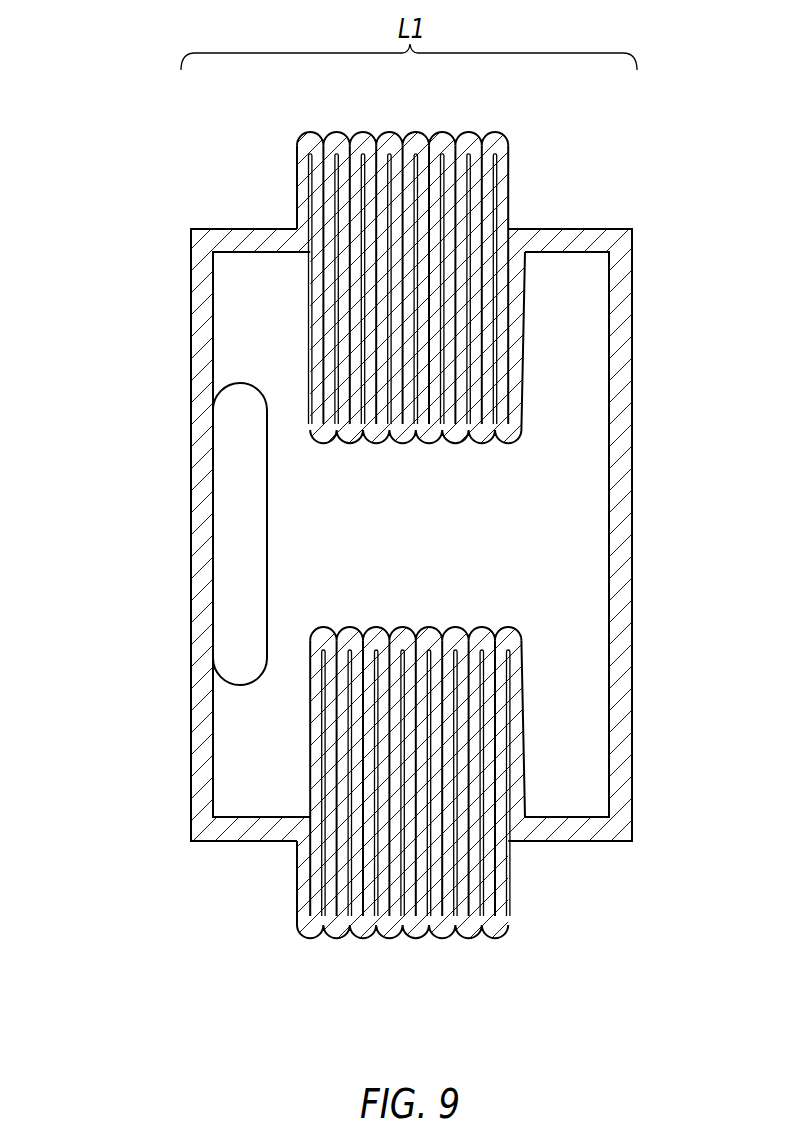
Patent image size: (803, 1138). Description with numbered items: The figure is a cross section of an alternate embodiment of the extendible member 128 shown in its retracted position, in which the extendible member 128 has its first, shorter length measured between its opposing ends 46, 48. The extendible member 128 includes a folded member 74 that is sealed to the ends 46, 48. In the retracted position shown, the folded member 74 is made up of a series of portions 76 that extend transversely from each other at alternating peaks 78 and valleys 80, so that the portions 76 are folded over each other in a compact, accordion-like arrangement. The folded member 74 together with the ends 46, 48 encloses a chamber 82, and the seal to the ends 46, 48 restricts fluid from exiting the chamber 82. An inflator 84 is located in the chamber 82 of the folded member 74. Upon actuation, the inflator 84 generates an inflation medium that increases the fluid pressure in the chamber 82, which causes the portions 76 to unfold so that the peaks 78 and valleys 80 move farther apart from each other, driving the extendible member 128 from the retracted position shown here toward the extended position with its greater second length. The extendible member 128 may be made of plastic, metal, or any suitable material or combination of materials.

The extendible member 128 is at (371, 523).
The folded member 74 is at (380, 108).
The portions 76 is at (473, 193).
The peaks 78 is at (332, 131).
The valleys 80 is at (378, 445).
The chamber 82 is at (419, 546).
The inflator 84 is at (235, 475).
The end 46 is at (191, 840).
The end 48 is at (632, 842).